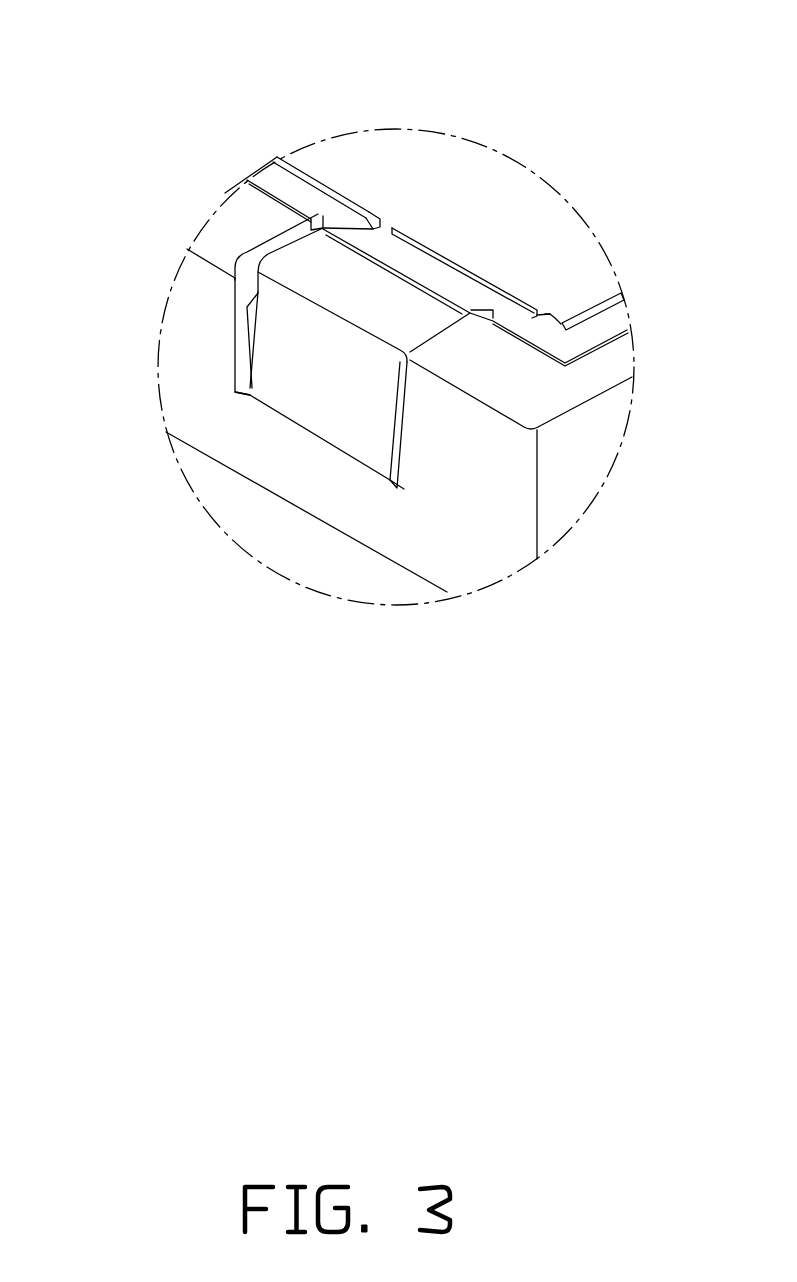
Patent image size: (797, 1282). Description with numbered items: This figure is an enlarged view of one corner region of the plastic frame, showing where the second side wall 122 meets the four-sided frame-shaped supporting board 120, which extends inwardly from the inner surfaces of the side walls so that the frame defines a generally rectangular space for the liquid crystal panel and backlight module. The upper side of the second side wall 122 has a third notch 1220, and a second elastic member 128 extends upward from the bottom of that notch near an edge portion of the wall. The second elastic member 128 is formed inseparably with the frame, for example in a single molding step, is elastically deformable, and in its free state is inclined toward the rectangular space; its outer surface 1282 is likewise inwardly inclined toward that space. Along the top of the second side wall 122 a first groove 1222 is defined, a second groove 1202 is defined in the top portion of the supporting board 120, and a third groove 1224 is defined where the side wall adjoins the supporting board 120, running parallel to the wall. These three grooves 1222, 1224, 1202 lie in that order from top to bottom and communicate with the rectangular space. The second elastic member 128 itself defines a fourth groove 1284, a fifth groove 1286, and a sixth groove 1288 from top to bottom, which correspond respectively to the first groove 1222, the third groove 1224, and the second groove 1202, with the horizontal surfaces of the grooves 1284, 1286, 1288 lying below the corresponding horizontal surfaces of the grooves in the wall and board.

The supporting board 120 is at (550, 337).
The second side wall 122 is at (187, 367).
The second elastic member 128 is at (335, 278).
The second groove 1202 is at (361, 214).
The third notch 1220 is at (243, 285).
The first groove 1222 is at (315, 223).
The third groove 1224 is at (267, 177).
The outer surface 1282 is at (320, 402).
The fourth groove 1284 is at (442, 287).
The fifth groove 1286 is at (420, 263).
The sixth groove 1288 is at (402, 232).